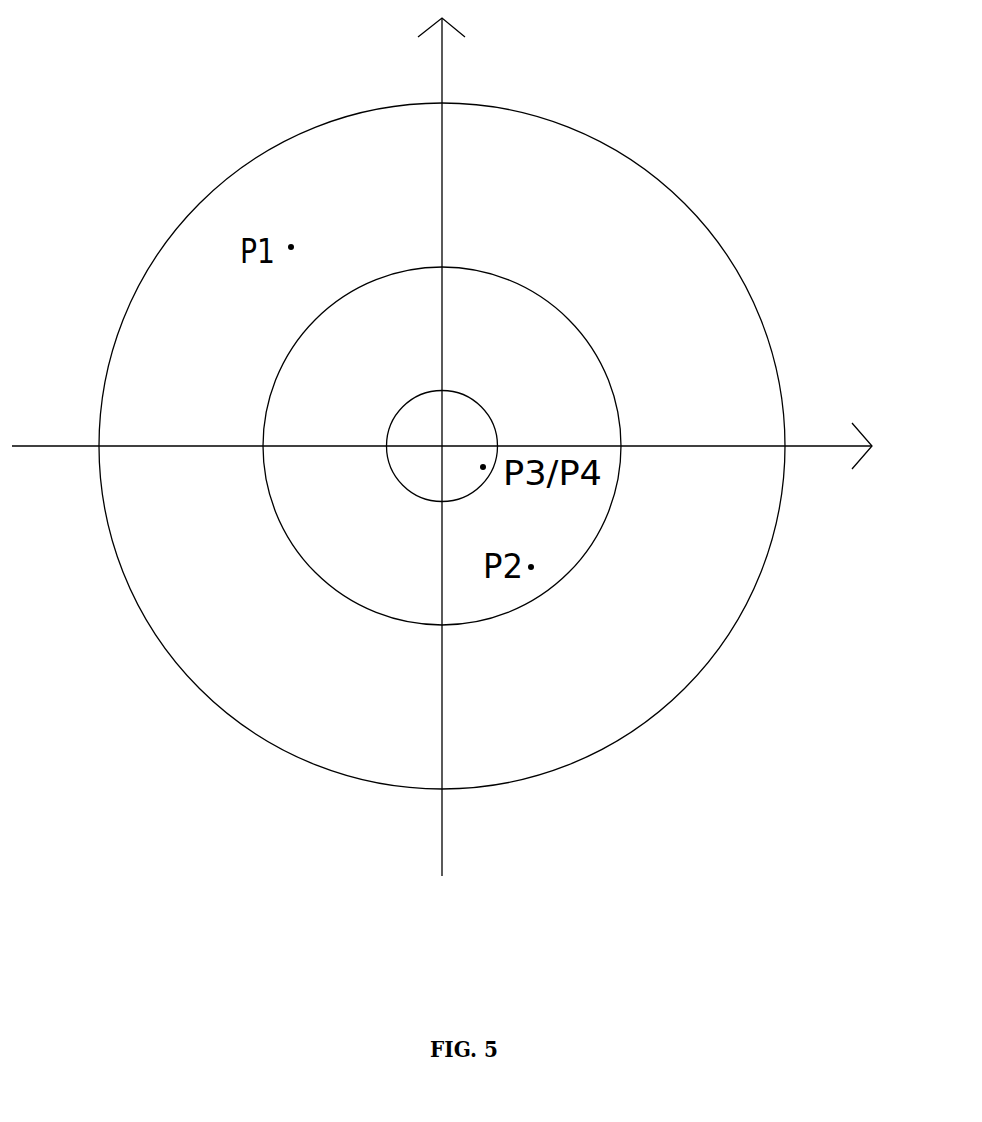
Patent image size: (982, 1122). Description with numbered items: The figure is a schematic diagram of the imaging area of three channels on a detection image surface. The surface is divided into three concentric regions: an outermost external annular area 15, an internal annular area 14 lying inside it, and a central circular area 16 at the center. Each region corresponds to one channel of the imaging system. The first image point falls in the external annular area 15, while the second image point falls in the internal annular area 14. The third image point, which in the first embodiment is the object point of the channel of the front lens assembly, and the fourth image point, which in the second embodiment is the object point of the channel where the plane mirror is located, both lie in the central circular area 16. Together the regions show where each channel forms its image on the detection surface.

The internal annular area 14 is at (375, 567).
The external annular area 15 is at (667, 303).
The central circular area 16 is at (460, 432).